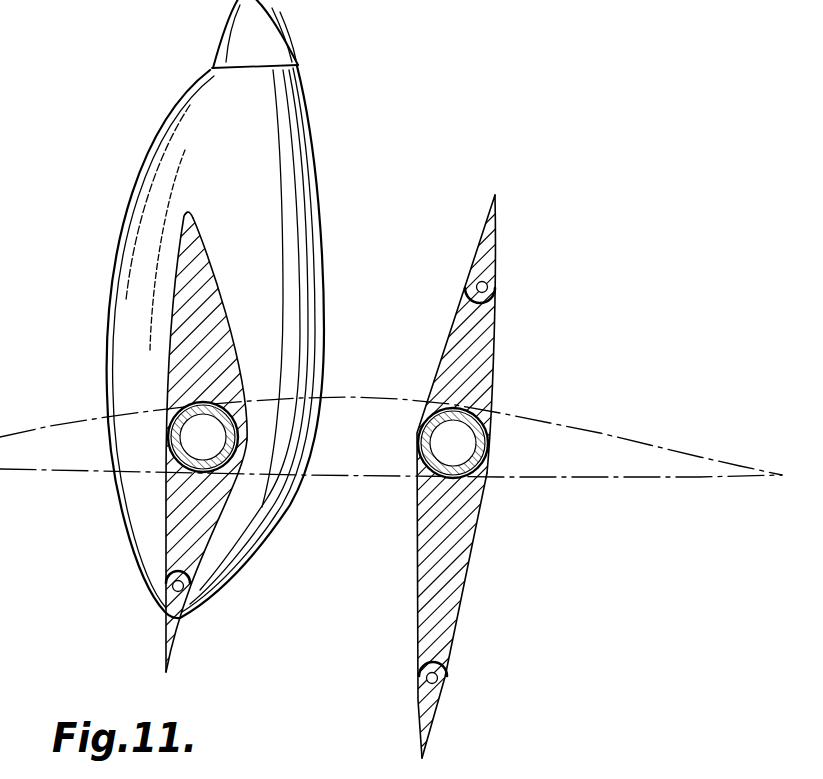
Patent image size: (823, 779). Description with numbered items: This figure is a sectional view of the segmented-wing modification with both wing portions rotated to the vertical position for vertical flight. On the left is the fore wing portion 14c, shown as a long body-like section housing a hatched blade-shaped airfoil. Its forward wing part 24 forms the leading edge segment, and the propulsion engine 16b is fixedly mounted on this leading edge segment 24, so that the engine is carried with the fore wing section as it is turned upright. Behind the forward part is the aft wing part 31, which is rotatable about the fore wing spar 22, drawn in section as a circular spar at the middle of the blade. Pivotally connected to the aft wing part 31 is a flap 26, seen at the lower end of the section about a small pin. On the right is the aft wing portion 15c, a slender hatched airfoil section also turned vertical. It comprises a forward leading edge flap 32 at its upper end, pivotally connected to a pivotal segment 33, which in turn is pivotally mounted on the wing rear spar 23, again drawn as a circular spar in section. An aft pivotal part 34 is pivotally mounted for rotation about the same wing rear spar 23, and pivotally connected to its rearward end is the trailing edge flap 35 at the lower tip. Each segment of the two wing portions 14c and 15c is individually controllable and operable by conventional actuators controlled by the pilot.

The propulsion engine 16b is at (300, 160).
The fore wing portion 14c is at (322, 440).
The forward wing part 24 is at (205, 273).
The fore wing spar 22 is at (217, 448).
The aft wing part 31 is at (197, 540).
The flap 26 is at (182, 633).
The aft wing portion 15c is at (411, 475).
The forward leading edge flap 32 is at (490, 258).
The pivotal segment 33 is at (487, 383).
The wing rear spar 23 is at (467, 454).
The aft pivotal part 34 is at (463, 583).
The trailing edge flap 35 is at (433, 723).